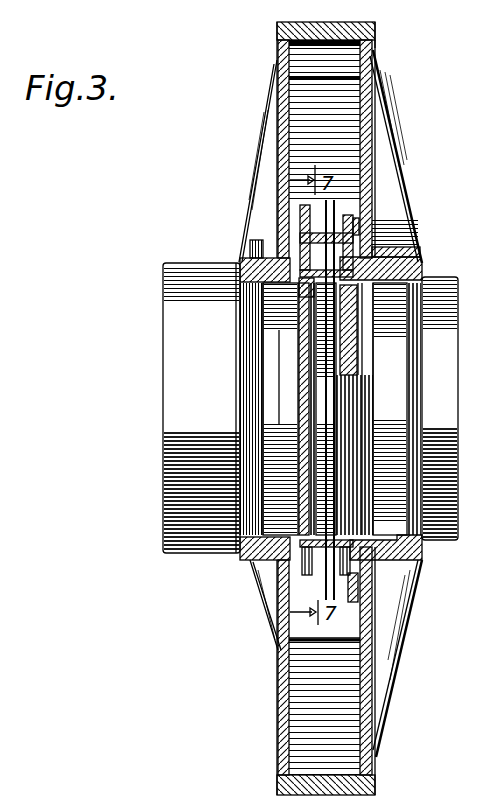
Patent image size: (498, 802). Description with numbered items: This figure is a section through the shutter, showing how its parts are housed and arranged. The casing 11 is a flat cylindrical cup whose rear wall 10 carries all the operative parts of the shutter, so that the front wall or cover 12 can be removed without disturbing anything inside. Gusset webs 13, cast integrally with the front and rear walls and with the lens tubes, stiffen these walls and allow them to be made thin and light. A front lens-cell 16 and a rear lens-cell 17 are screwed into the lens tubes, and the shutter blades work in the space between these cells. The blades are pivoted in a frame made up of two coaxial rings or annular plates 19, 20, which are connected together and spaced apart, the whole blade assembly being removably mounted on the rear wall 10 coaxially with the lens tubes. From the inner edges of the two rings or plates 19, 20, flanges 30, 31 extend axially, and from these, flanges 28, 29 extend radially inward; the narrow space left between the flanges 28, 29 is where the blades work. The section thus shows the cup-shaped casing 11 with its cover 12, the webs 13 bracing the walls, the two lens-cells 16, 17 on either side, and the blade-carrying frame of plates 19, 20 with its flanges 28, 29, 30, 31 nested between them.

The rear wall 10 is at (367, 187).
The casing 11 is at (330, 43).
The front wall or cover 12 is at (285, 100).
The gusset webs 13 is at (267, 202).
The front lens-cell 16 is at (201, 408).
The rear lens-cell 17 is at (440, 408).
The ring or annular plate 19 is at (307, 207).
The ring or annular plate 20 is at (358, 222).
The flange 28 is at (422, 266).
The flange 29 is at (302, 330).
The flange 30 is at (373, 247).
The flange 31 is at (320, 262).